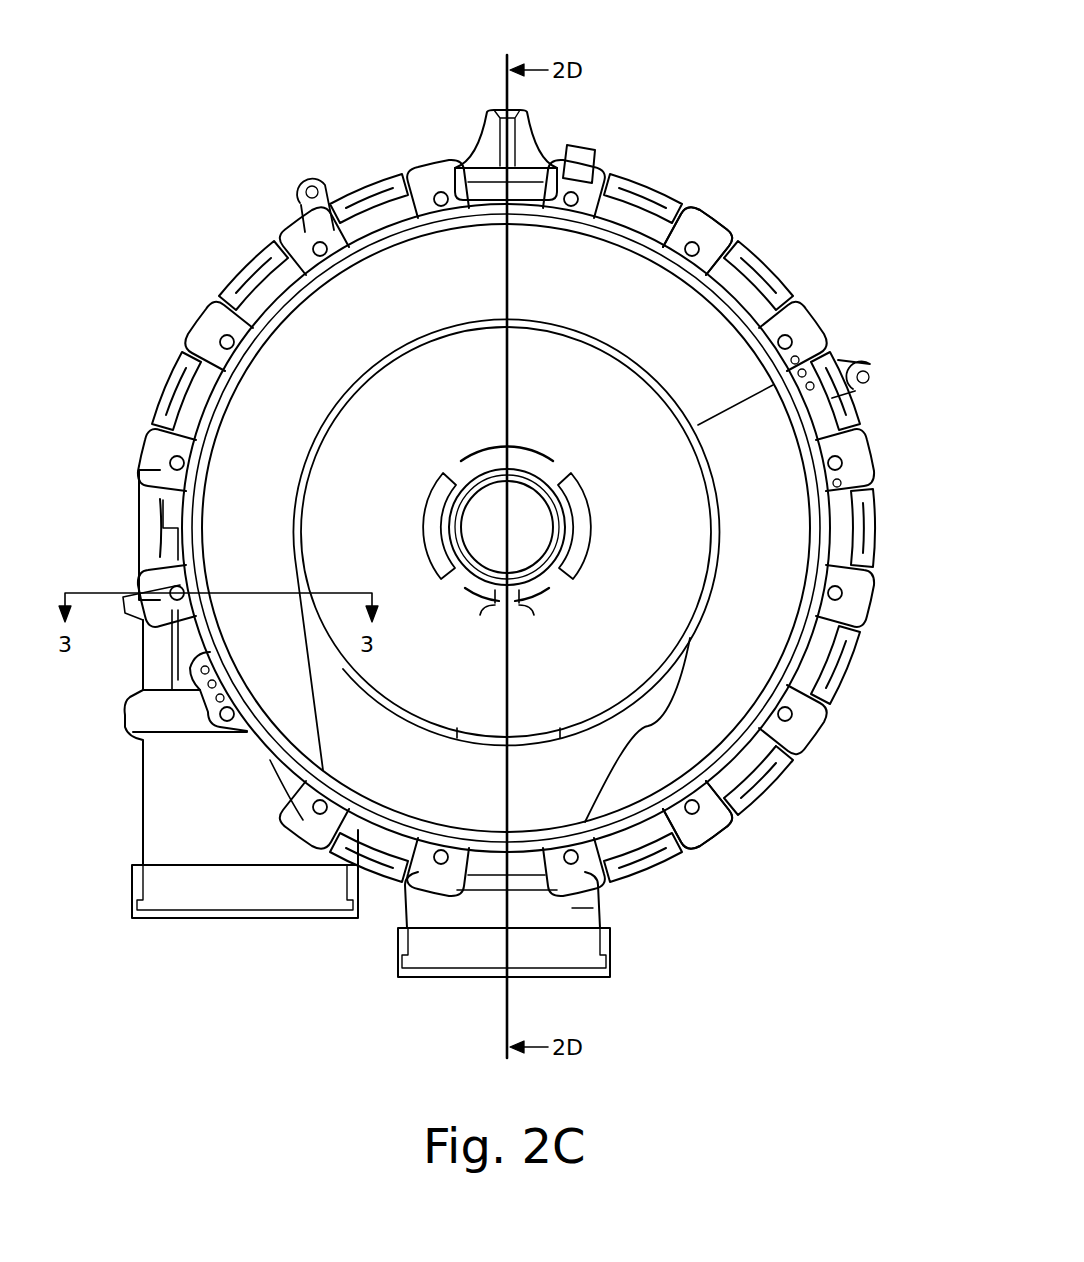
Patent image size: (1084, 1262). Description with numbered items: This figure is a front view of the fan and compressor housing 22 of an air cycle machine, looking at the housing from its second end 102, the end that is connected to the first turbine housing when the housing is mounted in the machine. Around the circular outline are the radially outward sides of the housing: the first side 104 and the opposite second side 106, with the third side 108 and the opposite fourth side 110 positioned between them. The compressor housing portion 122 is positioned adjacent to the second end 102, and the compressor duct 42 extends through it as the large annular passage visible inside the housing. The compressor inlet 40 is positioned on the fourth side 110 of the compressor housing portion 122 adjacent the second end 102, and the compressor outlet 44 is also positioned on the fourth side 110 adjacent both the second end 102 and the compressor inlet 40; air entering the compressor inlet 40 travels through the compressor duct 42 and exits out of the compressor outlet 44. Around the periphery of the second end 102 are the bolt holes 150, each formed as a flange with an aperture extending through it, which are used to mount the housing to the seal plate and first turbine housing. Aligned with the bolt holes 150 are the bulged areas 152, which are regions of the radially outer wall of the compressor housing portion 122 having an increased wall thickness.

The fan and compressor housing 22 is at (503, 523).
The compressor inlet 40 is at (548, 950).
The compressor duct 42 is at (468, 279).
The compressor outlet 44 is at (240, 890).
The second end 102 is at (713, 258).
The first side 104 is at (880, 497).
The second side 106 is at (148, 508).
The third side 108 is at (537, 165).
The fourth side 110 is at (493, 895).
The compressor housing portion 122 is at (190, 385).
The bolt holes 150 is at (693, 812).
The bulged areas 152 is at (706, 818).